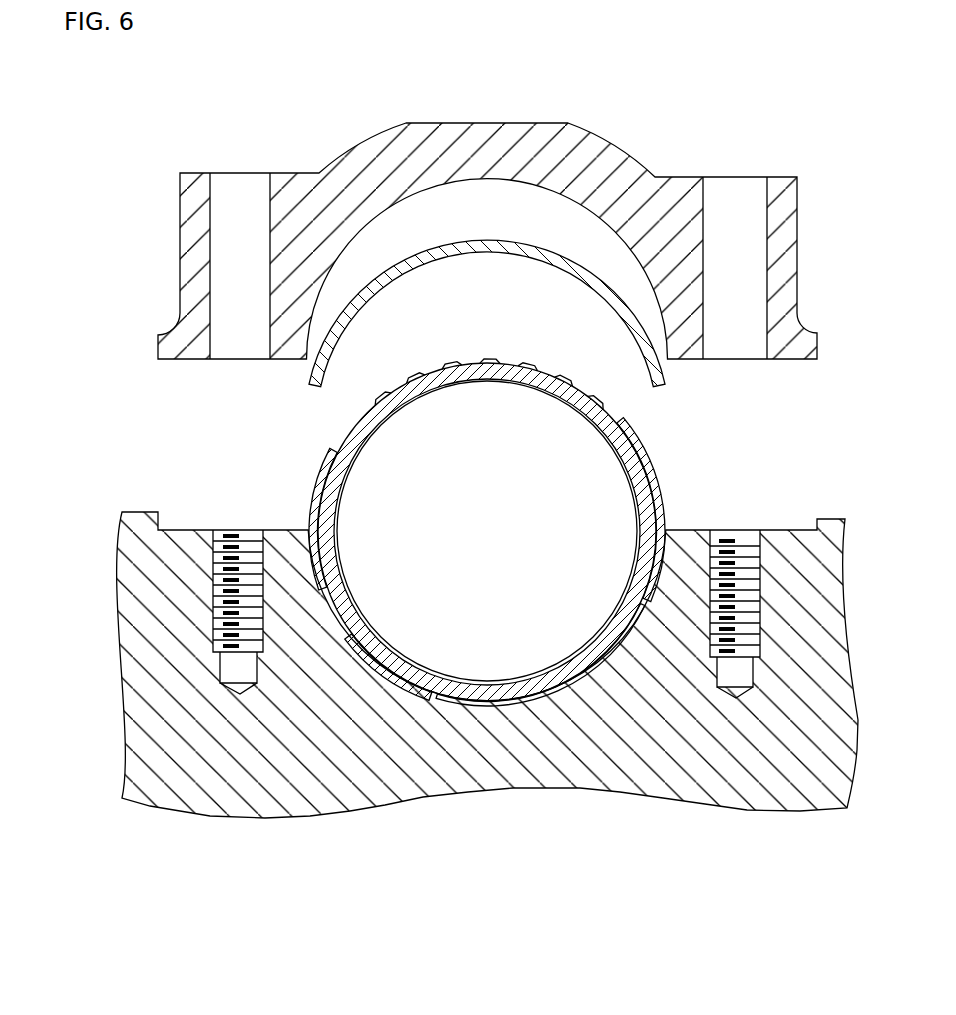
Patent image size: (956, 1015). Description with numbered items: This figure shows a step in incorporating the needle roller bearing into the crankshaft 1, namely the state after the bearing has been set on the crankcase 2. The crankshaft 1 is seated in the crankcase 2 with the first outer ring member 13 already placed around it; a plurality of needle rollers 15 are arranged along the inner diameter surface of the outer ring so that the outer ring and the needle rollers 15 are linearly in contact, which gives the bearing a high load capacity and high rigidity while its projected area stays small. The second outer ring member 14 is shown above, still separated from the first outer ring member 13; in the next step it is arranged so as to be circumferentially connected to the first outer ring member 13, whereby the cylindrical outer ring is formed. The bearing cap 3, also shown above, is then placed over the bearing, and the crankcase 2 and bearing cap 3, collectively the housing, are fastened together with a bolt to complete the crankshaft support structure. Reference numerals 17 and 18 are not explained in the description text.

The crankshaft 1 is at (583, 485).
The crankcase 2 is at (600, 760).
The bearing cap 3 is at (587, 152).
The first outer ring member 13 is at (485, 705).
The second outer ring member 14 is at (489, 244).
The needle rollers 15 is at (357, 423).
The strip 17 is at (338, 475).
The elastic layer 18 is at (423, 700).